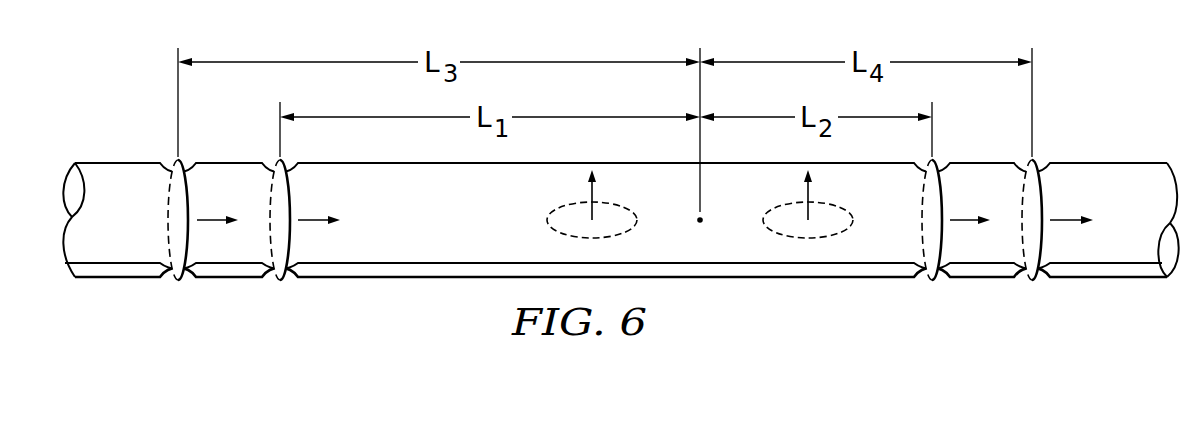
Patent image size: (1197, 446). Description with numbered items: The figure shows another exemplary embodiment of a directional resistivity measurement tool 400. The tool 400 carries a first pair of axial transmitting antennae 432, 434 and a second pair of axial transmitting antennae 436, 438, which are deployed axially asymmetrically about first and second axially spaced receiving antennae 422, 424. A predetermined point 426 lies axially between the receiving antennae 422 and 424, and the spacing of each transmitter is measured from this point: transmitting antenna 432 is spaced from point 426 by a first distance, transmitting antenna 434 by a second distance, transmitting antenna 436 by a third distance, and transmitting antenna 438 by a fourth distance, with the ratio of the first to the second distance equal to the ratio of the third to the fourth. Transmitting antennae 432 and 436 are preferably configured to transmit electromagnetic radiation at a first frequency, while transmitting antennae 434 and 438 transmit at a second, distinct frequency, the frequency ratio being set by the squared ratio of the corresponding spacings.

The measurement tool 400 is at (122, 163).
The first receiving antenna 422 is at (547, 220).
The second receiving antenna 424 is at (822, 238).
The predetermined point 426 is at (702, 223).
The transmitting antenna 432 is at (291, 205).
The transmitting antenna 434 is at (941, 237).
The transmitting antenna 436 is at (187, 238).
The transmitting antenna 438 is at (1043, 205).